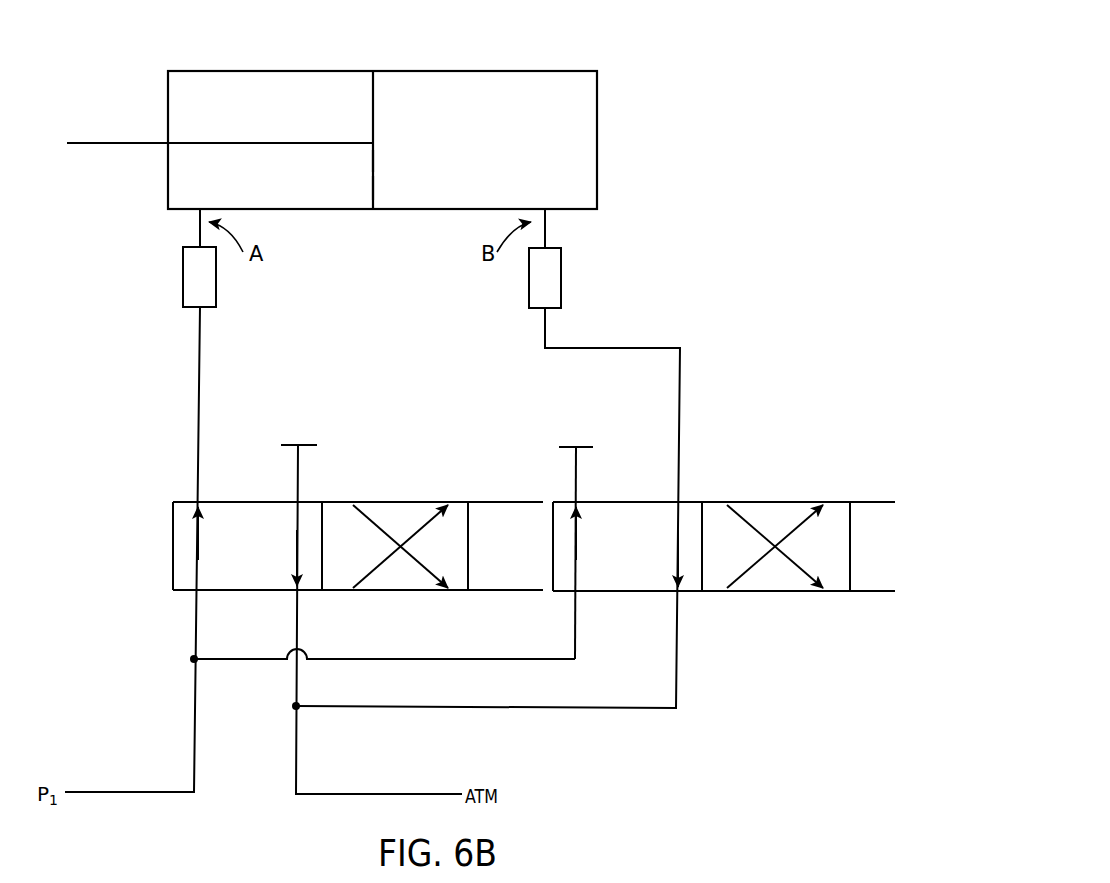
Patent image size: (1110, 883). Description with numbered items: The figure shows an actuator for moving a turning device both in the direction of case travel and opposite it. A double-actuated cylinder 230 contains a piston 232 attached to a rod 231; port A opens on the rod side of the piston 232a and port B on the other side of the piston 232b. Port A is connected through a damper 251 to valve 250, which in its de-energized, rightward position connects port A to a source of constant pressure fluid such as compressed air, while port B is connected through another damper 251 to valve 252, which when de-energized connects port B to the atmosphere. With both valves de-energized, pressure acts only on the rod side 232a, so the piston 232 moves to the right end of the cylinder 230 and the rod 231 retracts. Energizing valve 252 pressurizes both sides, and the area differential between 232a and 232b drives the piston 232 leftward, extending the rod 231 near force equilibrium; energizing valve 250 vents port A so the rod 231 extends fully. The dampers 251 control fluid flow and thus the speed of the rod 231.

The cylinder 230 is at (523, 71).
The rod 231 is at (131, 141).
The piston 232 is at (374, 95).
The rod side of the piston 232a is at (372, 167).
The other side of the piston 232b is at (374, 181).
The valve 250 is at (437, 482).
The damper 251 is at (217, 278).
The valve 252 is at (780, 482).